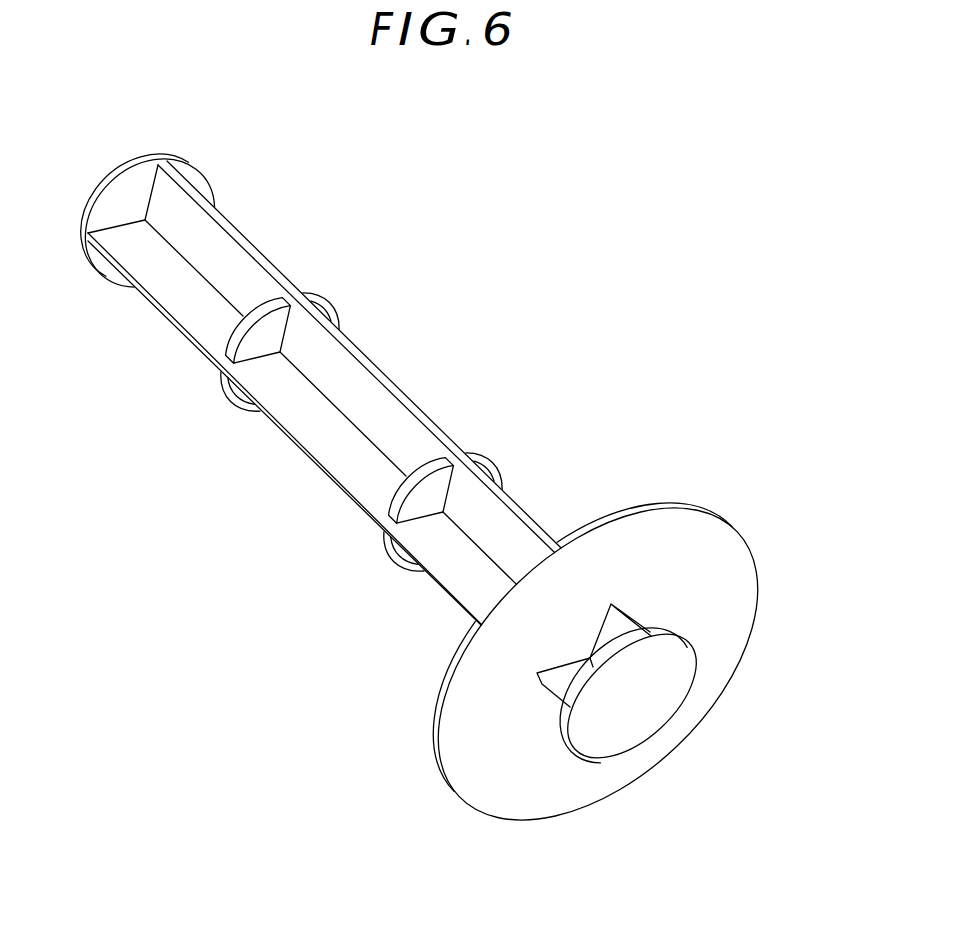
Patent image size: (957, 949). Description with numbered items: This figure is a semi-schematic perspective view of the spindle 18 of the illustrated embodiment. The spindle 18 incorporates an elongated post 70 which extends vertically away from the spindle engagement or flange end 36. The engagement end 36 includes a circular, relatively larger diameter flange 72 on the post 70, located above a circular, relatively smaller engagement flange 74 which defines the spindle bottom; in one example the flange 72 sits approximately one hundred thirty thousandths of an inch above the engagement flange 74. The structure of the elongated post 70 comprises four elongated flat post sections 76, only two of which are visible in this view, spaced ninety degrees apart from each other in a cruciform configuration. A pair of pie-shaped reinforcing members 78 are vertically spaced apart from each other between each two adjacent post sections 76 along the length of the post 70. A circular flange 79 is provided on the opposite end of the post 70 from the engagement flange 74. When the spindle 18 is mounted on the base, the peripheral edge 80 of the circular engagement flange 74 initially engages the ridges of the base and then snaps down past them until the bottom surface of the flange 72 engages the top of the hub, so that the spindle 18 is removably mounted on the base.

The spindle 18 is at (235, 519).
The engagement end 36 is at (750, 709).
The elongated post 70 is at (139, 326).
The flange 72 is at (677, 503).
The engagement flange 74 is at (620, 744).
The flat post sections 76 is at (368, 393).
The pie-shaped reinforcing members 78 is at (262, 337).
The circular flange 79 is at (128, 165).
The peripheral edge 80 is at (670, 628).